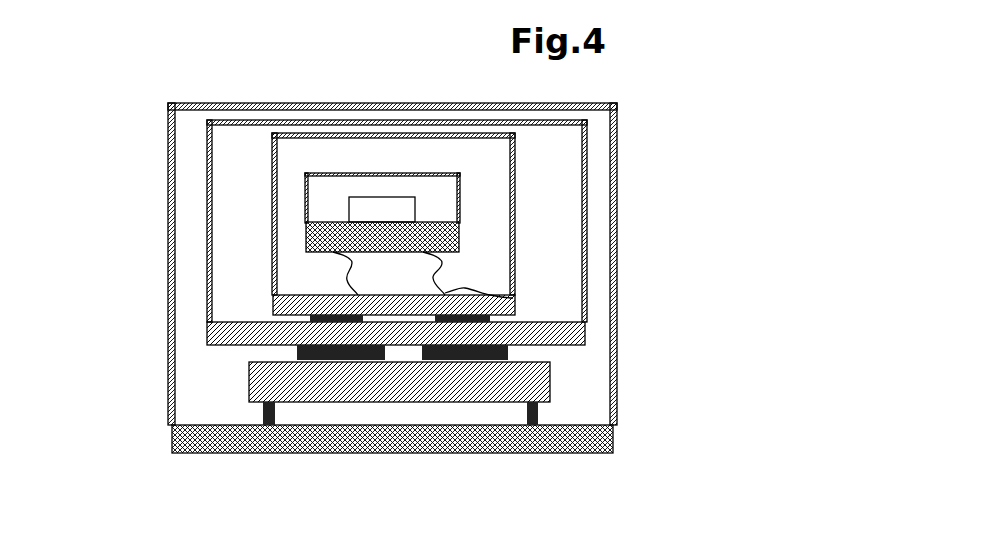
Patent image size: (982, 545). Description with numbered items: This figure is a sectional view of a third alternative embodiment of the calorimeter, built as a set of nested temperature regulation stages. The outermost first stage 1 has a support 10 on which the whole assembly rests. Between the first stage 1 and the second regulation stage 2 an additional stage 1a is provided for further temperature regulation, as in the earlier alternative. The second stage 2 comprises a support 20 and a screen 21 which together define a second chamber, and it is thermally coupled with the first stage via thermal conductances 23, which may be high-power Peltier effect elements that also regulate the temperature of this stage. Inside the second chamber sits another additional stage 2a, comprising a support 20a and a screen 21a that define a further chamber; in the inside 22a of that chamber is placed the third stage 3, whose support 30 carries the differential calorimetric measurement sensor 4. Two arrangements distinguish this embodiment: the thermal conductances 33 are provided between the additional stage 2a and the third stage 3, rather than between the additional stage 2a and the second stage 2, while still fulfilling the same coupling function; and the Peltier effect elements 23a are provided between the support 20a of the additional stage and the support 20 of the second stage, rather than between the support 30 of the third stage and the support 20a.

The first stage 1 is at (629, 403).
The additional stage 1a is at (241, 391).
The second regulation stage 2 is at (198, 243).
The additional stage 2a is at (263, 200).
The third stage 3 is at (466, 179).
The differential calorimetric measurement sensor 4 is at (365, 208).
The support 10 is at (617, 453).
The support 20 is at (585, 343).
The support 20a is at (297, 350).
The screen 21 is at (585, 290).
The screen 21a is at (272, 142).
The inside 22a is at (490, 205).
The thermal conductances 23 is at (248, 363).
The Peltier effect elements 23a is at (305, 318).
The support 30 is at (460, 230).
The thermal conductances 33 is at (498, 318).